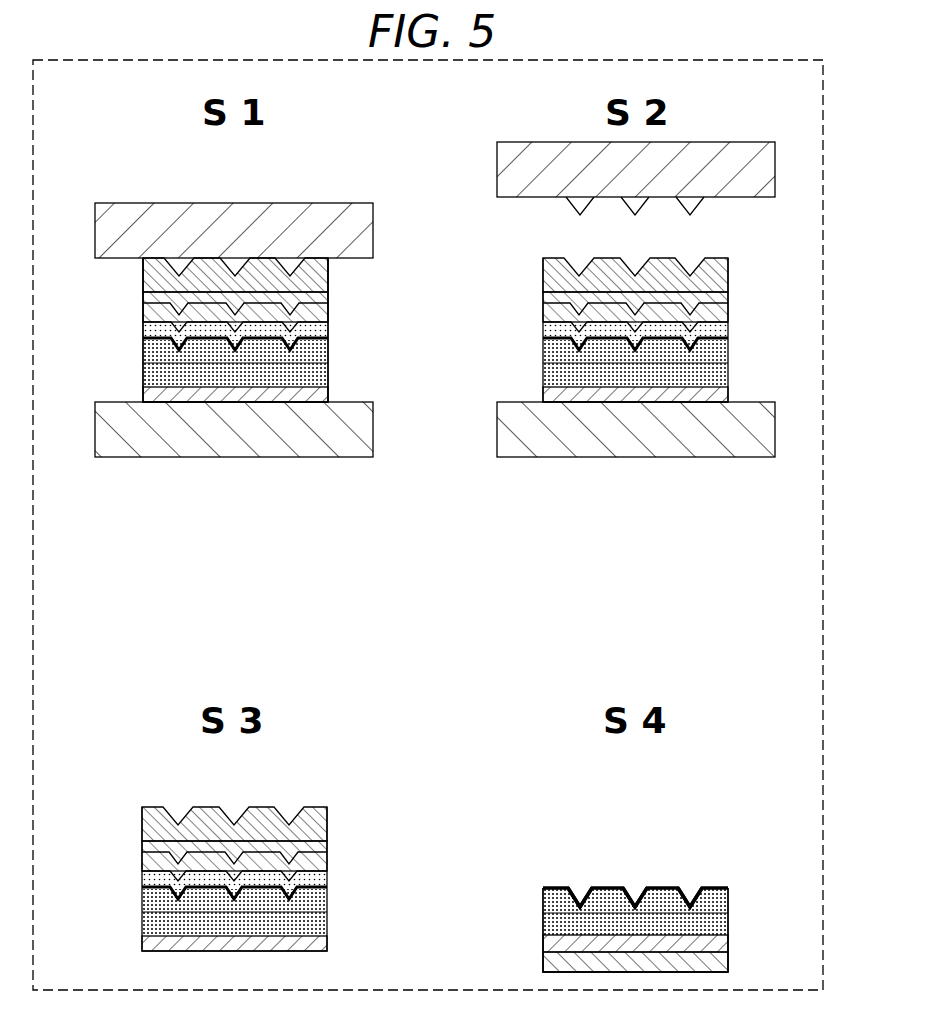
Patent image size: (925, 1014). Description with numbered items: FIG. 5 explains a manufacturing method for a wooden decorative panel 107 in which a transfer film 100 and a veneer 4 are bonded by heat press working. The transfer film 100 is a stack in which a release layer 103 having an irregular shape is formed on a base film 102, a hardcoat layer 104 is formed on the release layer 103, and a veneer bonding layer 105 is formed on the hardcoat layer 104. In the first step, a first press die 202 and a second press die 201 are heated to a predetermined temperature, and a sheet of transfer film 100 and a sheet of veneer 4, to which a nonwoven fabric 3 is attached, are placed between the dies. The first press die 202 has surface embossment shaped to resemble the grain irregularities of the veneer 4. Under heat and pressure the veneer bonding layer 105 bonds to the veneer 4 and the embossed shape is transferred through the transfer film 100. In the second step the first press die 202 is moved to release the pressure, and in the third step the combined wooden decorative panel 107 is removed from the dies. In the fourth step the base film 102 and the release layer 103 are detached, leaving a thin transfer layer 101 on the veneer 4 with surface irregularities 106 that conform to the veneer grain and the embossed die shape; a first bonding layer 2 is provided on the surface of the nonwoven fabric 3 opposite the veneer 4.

The first bonding layer 2 is at (729, 958).
The nonwoven fabric 3 is at (143, 394).
The veneer 4 is at (143, 362).
The transfer film 100 is at (135, 260).
The transfer layer 101 is at (708, 888).
The base film 102 is at (328, 268).
The release layer 103 is at (328, 300).
The hardcoat layer 104 is at (328, 323).
The veneer bonding layer 105 is at (328, 341).
The surface irregularities 106 is at (690, 886).
The wooden decorative panel 107 is at (520, 890).
The second press die 201 is at (140, 458).
The first press die 202 is at (318, 205).